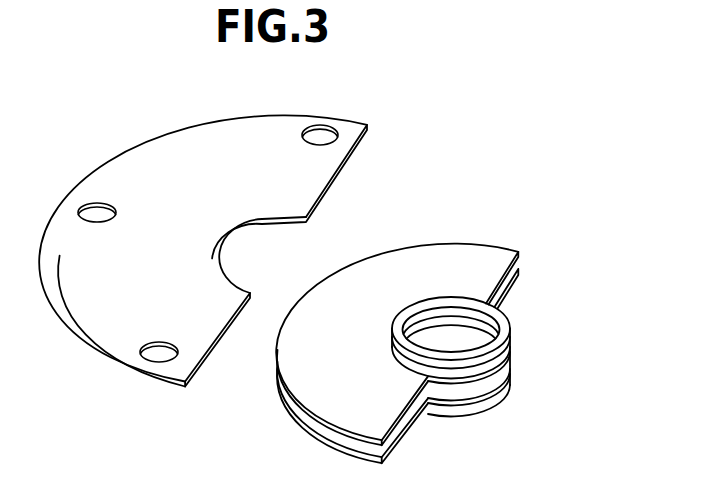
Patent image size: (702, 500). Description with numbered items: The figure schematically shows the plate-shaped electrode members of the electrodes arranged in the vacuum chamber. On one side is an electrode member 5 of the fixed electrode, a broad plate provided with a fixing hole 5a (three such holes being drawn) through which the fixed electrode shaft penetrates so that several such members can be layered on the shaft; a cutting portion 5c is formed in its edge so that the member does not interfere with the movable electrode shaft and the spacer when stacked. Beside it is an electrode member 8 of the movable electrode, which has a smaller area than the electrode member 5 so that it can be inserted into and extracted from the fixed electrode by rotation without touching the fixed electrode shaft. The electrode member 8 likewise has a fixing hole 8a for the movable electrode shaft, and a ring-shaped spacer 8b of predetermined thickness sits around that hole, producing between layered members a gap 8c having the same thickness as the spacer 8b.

The electrode member 5 is at (328, 166).
The fixing hole 5a is at (321, 134).
The cutting portion 5c is at (260, 253).
The electrode member 8 is at (470, 255).
The fixing hole 8a is at (481, 340).
The spacer 8b is at (503, 329).
The gap 8c is at (323, 426).